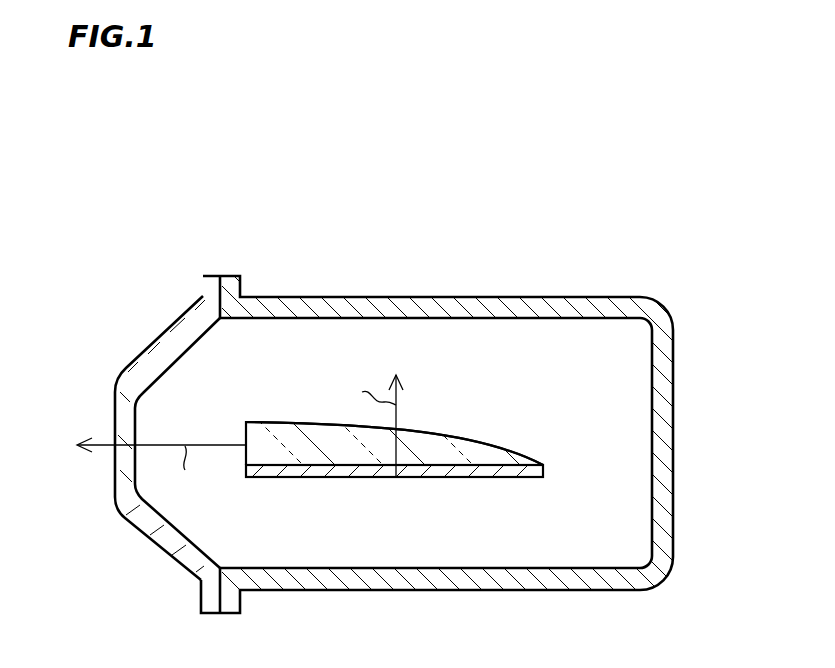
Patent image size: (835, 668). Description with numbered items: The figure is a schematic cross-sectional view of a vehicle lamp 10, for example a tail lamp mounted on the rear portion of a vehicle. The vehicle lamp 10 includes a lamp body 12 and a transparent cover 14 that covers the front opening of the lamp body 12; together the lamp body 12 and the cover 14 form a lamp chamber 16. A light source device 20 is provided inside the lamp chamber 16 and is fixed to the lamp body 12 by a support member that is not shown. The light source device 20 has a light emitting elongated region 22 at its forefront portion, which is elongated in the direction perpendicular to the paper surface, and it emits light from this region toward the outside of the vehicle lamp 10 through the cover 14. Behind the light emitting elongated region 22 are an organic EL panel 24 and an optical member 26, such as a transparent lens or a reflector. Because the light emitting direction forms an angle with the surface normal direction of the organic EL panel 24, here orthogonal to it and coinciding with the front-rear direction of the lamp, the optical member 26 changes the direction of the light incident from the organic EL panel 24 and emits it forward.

The vehicle lamp 10 is at (78, 302).
The lamp body 12 is at (673, 363).
The cover 14 is at (115, 410).
The lamp chamber 16 is at (570, 400).
The light source device 20 is at (257, 406).
The light emitting elongated region 22 is at (246, 430).
The organic EL panel 24 is at (432, 480).
The optical member 26 is at (445, 442).